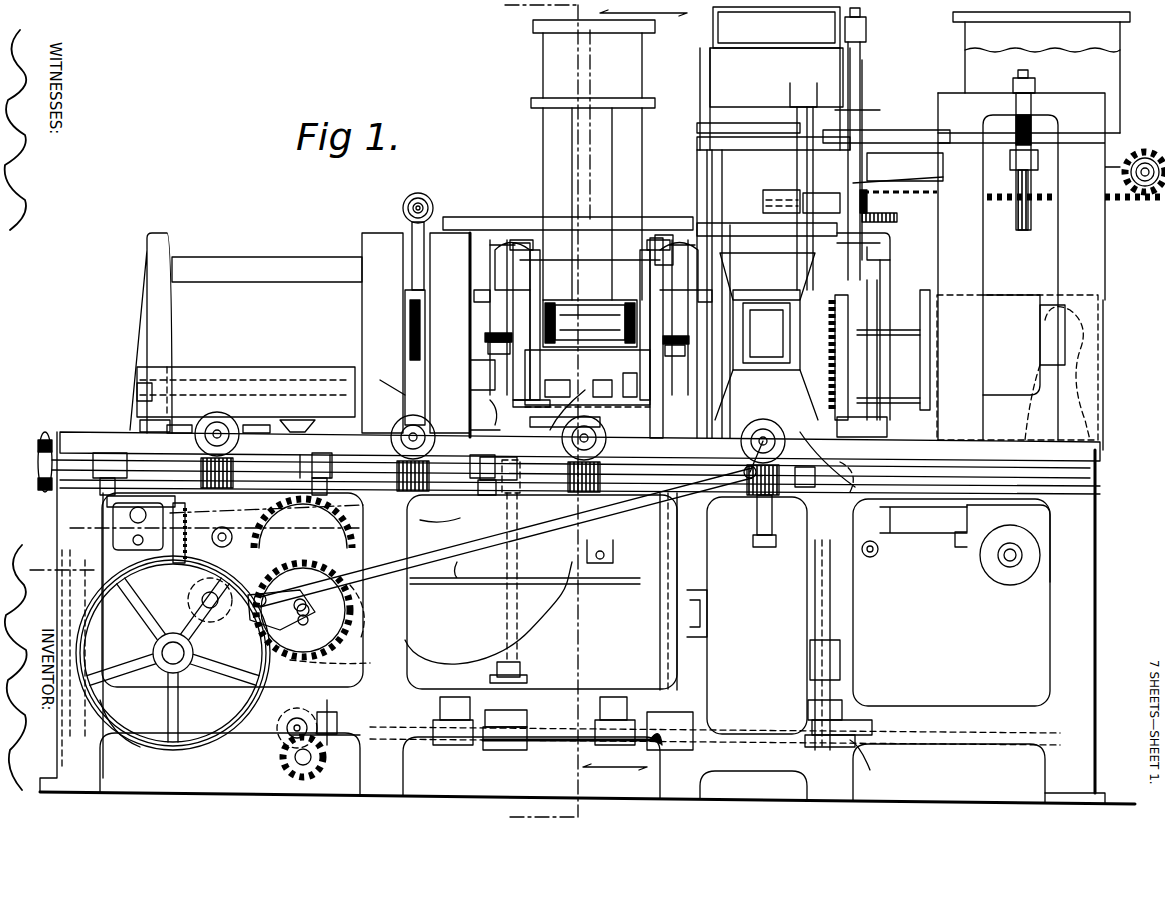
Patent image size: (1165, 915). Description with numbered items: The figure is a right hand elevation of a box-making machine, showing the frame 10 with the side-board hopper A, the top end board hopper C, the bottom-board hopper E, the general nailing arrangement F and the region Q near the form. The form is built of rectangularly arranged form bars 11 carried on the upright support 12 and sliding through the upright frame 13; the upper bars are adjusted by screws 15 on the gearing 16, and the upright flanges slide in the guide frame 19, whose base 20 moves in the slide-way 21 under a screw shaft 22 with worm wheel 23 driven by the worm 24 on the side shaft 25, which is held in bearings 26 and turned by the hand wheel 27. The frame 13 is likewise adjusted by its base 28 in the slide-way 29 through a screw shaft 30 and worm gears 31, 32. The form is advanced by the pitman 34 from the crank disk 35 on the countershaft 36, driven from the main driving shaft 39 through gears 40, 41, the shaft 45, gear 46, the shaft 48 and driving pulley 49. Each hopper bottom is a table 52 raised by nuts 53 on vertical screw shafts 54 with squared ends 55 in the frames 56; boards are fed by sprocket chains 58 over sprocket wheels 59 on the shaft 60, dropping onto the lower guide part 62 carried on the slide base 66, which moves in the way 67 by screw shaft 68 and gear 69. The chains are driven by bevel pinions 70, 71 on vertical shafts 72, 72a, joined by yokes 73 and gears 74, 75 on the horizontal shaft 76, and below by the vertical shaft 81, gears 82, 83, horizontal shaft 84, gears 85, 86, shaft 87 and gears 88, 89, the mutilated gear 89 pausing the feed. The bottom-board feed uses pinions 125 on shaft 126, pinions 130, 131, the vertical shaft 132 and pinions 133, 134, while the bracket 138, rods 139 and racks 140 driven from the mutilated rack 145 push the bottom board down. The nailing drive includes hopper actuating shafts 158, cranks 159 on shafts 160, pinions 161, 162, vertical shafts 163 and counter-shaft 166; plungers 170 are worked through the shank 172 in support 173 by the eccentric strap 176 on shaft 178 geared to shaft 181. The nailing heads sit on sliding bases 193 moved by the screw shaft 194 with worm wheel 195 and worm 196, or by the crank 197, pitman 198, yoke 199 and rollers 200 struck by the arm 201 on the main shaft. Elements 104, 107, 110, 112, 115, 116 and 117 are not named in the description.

The main frame 10 is at (95, 548).
The form bars 11 is at (292, 265).
The upright support 12 is at (172, 325).
The upright frame 13 is at (362, 308).
The screws 15 is at (435, 320).
The gearing 16 is at (445, 208).
The guide frame 19 is at (262, 367).
The shaft 126 is at (150, 390).
The base 20 is at (145, 420).
The slide-way 21 is at (140, 425).
The screw shaft 22 is at (200, 440).
The worm wheel 23 is at (220, 430).
The worm 24 is at (571, 480).
The shaft 25 is at (301, 476).
The bearings 26 is at (110, 470).
The hand wheel 27 is at (42, 440).
The base 28 is at (421, 442).
The slide-way 29 is at (482, 429).
The screw shaft 30 is at (413, 437).
The worm gear 31 is at (387, 392).
The worm gear 32 is at (420, 485).
The pitman 34 is at (303, 519).
The crank disk 35 is at (488, 613).
The countershaft 36 is at (525, 587).
The main driving shaft 39 is at (370, 612).
The gear 40 is at (303, 604).
The gear 41 is at (207, 530).
The shaft 45 is at (210, 611).
The gear 46 is at (150, 640).
The shaft 48 is at (173, 665).
The driving pulley 49 is at (121, 732).
The table 52 is at (743, 250).
The nuts 53 is at (1011, 173).
The vertical screw shafts 54 is at (1029, 271).
The squared ends 55 is at (1030, 75).
The frames 56 is at (660, 235).
The sprocket chains 58 is at (852, 270).
The sprocket wheels 59 is at (1145, 140).
The shaft 60 is at (874, 291).
The lower guide part 62 is at (488, 412).
The slide base 66 is at (581, 395).
The way 67 is at (650, 455).
The screw shaft 68 is at (570, 447).
The gear 69 is at (565, 490).
The bevel pinions 70 is at (487, 335).
The bevel pinions 71 is at (490, 350).
The vertical shaft 72 is at (480, 375).
The vertical shaft 72a is at (705, 377).
The yokes 73 is at (587, 378).
The gear 74 is at (492, 260).
The gear 75 is at (510, 245).
The horizontal shaft 76 is at (590, 255).
The vertical shaft 81 is at (660, 620).
The gear 82 is at (688, 705).
The gear 83 is at (670, 740).
The horizontal shaft 84 is at (568, 755).
The gear 85 is at (340, 710).
The gear 86 is at (305, 757).
The shaft 87 is at (288, 768).
The gear 88 is at (280, 745).
The mutilated gear 89 is at (340, 662).
The bracket 104 is at (622, 554).
The opening 107 is at (443, 519).
The bracket 110 is at (113, 530).
The pinion 112 is at (242, 531).
The post 115 is at (510, 650).
The bracket 116 is at (533, 710).
The foot 117 is at (534, 745).
The pinions 125 is at (925, 185).
The pinion 130 is at (862, 90).
The pinion 131 is at (877, 106).
The vertical shaft 132 is at (835, 570).
The pinion 133 is at (840, 715).
The pinion 134 is at (857, 756).
The bracket 138 is at (866, 30).
The rods 139 is at (860, 60).
The racks 140 is at (855, 383).
The mutilated rack 145 is at (140, 510).
The hopper actuating shafts 158 is at (797, 158).
The cranks 159 is at (793, 241).
The shafts 160 is at (768, 294).
The pinion 161 is at (900, 205).
The pinion 162 is at (901, 227).
The vertical shafts 163 is at (848, 300).
The counter-shaft 166 is at (878, 549).
The plungers 170 is at (879, 348).
The shank 172 is at (1020, 350).
The support 173 is at (1011, 328).
The eccentric strap 176 is at (975, 582).
The shaft 178 is at (1008, 545).
The shaft 181 is at (935, 492).
The sliding bases 193 is at (847, 464).
The screw shaft 194 is at (740, 466).
The worm wheel 195 is at (782, 521).
The worm 196 is at (769, 498).
The crank 197 is at (750, 405).
The pitman 198 is at (515, 545).
The yoke 199 is at (284, 620).
The rollers 200 is at (282, 624).
The arm 201 is at (321, 583).
The hopper A is at (612, 175).
The hopper C is at (593, 120).
The hopper E is at (965, 67).
The nailing arrangement F is at (725, 40).
The blank Q is at (291, 307).